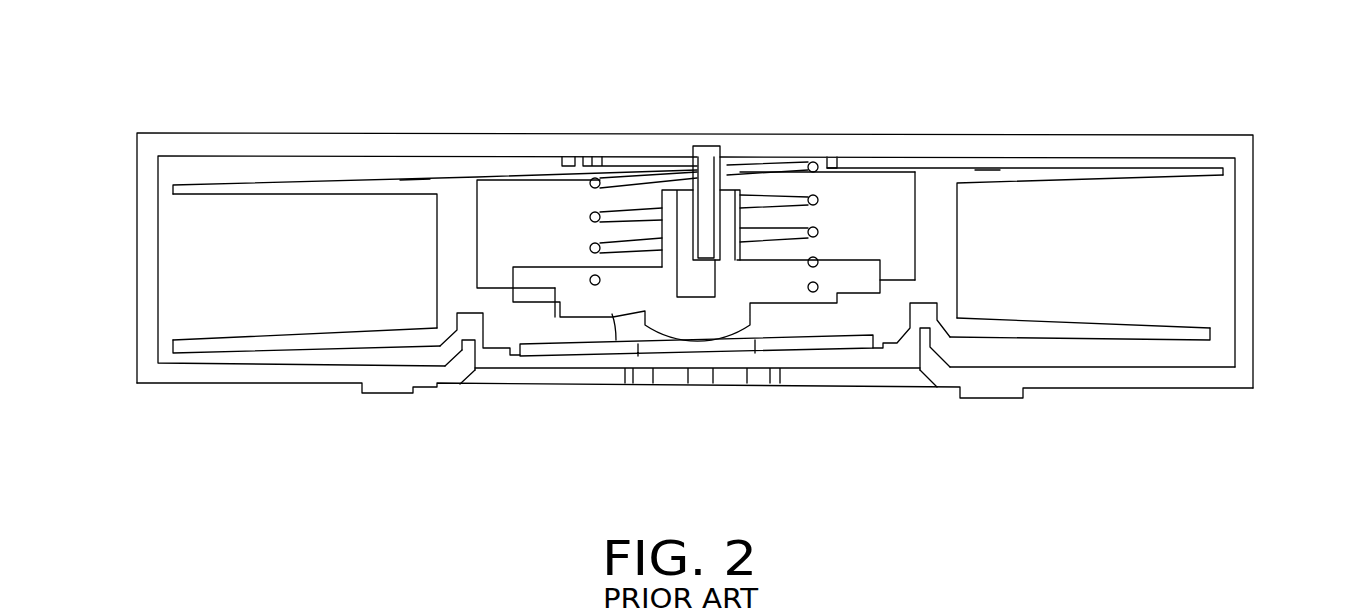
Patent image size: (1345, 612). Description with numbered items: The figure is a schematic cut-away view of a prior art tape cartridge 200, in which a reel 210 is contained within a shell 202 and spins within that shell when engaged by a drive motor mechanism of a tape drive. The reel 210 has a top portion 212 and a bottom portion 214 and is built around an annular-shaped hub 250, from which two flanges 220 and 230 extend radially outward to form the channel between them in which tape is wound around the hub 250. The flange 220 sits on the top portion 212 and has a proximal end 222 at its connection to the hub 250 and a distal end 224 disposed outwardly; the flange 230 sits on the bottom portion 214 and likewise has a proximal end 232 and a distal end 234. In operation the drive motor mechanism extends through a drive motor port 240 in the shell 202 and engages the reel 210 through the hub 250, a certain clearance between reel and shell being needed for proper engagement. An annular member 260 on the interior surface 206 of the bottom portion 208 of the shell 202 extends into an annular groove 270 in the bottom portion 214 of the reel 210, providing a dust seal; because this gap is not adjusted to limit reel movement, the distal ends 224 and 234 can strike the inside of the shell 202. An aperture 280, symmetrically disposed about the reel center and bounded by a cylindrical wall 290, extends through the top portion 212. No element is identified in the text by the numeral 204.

The tape cartridge 200 is at (803, 400).
The shell 202 is at (718, 138).
The housing 204 is at (178, 156).
The interior surface 206 is at (1205, 362).
The bottom portion of shell 208 is at (236, 385).
The reel 210 is at (477, 178).
The top portion of reel 212 is at (560, 170).
The bottom portion of reel 214 is at (587, 332).
The flange 220 is at (1100, 175).
The proximal end of flange 220 222 is at (988, 178).
The distal end of flange 220 224 is at (1220, 168).
The flange 230 is at (1090, 332).
The proximal end of flange 230 232 is at (975, 325).
The distal end of flange 230 234 is at (1284, 326).
The drive motor port 240 is at (700, 385).
The hub 250 is at (942, 225).
The annular member 260 is at (923, 340).
The annular groove 270 is at (920, 315).
The aperture 280 is at (867, 168).
The wall of aperture 290 is at (840, 203).